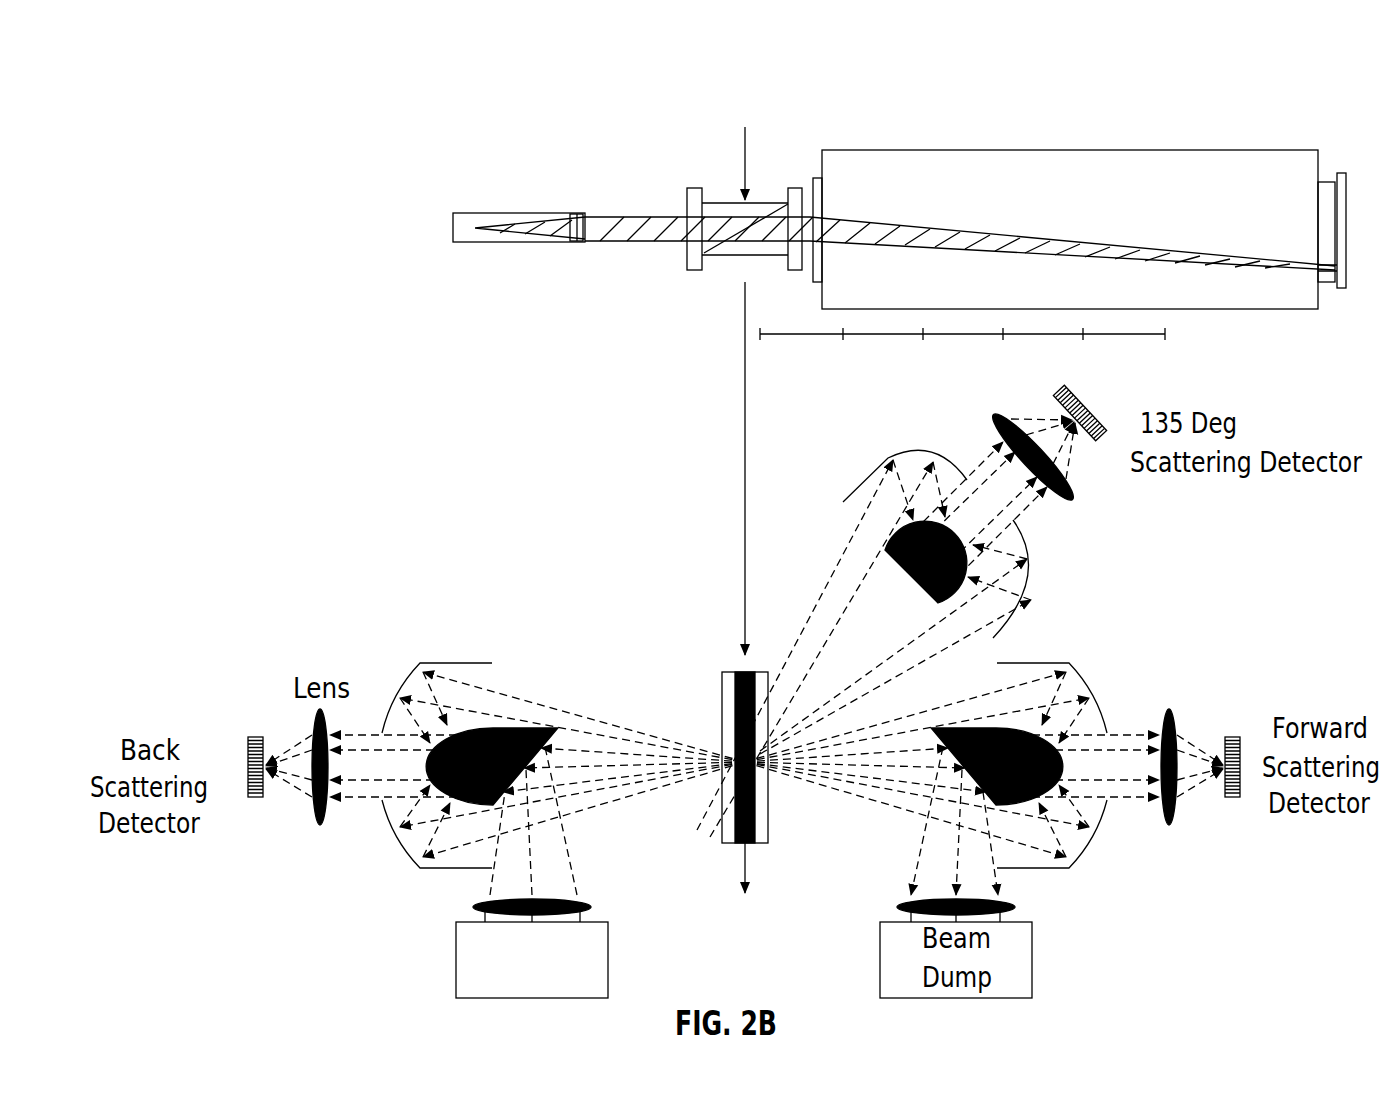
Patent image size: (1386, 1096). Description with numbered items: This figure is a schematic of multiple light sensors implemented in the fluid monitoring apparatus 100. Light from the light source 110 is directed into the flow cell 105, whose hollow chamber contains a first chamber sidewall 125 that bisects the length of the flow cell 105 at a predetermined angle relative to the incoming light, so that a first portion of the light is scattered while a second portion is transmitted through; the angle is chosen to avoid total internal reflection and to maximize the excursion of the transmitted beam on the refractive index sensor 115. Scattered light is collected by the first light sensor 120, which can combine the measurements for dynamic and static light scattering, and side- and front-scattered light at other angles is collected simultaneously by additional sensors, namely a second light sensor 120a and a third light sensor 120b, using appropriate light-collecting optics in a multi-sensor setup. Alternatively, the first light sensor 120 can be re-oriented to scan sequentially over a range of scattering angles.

The fluid monitoring apparatus 100 is at (222, 172).
The flow cell 105 is at (680, 181).
The light source 110 is at (555, 973).
The refractive index sensor 115 is at (890, 149).
The first light sensor 120 is at (258, 727).
The second light sensor 120a is at (1228, 707).
The third light sensor 120b is at (1098, 458).
The first chamber sidewall 125 is at (786, 205).